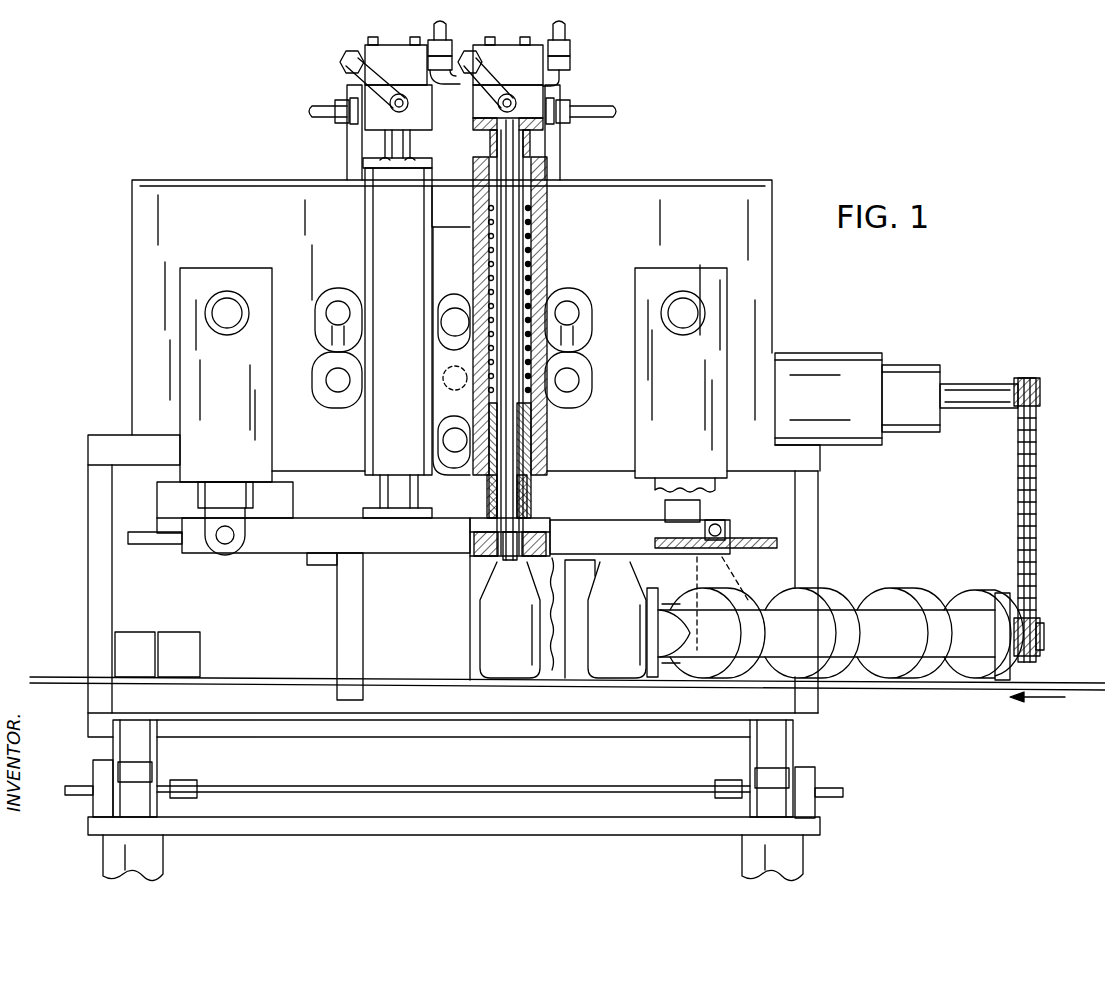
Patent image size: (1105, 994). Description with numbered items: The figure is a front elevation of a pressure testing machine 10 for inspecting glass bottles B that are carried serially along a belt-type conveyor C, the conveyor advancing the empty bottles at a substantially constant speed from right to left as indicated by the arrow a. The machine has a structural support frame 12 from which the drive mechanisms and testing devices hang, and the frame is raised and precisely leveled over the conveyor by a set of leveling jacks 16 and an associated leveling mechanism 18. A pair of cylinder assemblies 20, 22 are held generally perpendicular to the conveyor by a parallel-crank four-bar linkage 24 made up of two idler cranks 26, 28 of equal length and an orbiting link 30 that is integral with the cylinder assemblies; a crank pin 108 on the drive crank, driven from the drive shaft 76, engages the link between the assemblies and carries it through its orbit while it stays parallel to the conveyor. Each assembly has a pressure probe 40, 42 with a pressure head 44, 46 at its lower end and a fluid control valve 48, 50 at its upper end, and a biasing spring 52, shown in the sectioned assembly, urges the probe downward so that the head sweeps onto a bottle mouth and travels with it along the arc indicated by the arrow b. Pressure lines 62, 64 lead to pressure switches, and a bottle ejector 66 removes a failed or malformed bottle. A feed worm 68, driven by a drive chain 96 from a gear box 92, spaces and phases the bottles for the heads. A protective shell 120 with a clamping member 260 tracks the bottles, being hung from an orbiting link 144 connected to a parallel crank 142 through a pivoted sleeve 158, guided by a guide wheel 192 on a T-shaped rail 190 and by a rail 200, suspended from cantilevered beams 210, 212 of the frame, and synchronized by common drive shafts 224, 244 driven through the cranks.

The pressure testing machine 10 is at (118, 193).
The structural support frame 12 is at (690, 215).
The leveling jacks 16 is at (150, 746).
The leveling mechanism 18 is at (100, 770).
The cylinder assembly 20 is at (535, 208).
The cylinder assembly 22 is at (382, 230).
The parallel-crank four-bar linkage 24 is at (598, 310).
The idler crank 26 is at (578, 343).
The idler crank 28 is at (326, 325).
The orbiting link 30 is at (358, 408).
The pressure probe 40 is at (536, 492).
The pressure probe 42 is at (388, 491).
The pressure head 44 is at (548, 532).
The pressure head 46 is at (365, 516).
The fluid control valve 48 is at (512, 70).
The fluid control valve 50 is at (372, 62).
The biasing spring 52 is at (527, 242).
The pressure line 62 is at (580, 112).
The pressure line 64 is at (325, 112).
The bottle ejector 66 is at (152, 604).
The feed worm 68 is at (903, 622).
The drive shaft 76 is at (455, 312).
The 90° gear box 92 is at (835, 416).
The drive chain 96 is at (1033, 493).
The crank pin 108 is at (455, 440).
The shell 120 is at (350, 608).
The parallel crank 142 is at (222, 494).
The orbiting link 144 is at (270, 538).
The pivoted sleeve 158 is at (221, 548).
The T-shaped rail 190 is at (730, 540).
The guide wheel 192 is at (702, 508).
The T-shaped rail 200 is at (168, 511).
The cantilevered beam 210 is at (704, 400).
The cantilevered beam 212 is at (245, 400).
The common drive shaft 224 is at (683, 312).
The common drive shaft 244 is at (227, 312).
The clamping member 260 is at (466, 556).
The glass bottle B is at (498, 640).
The arrow indicating orbital path portion b is at (562, 382).
The arrow indicating direction of motion a is at (1062, 697).
The belt-type conveyor C is at (1060, 692).